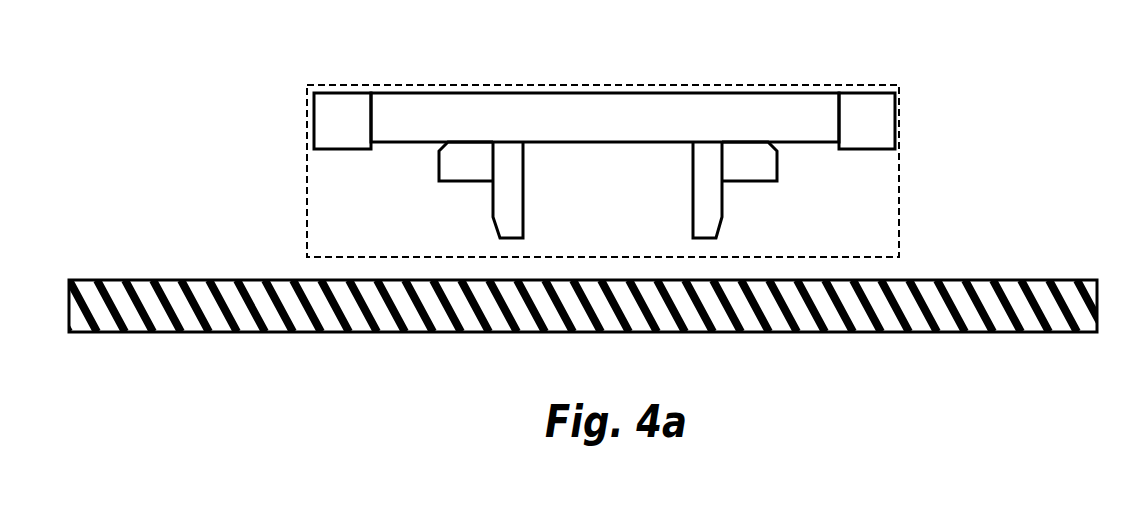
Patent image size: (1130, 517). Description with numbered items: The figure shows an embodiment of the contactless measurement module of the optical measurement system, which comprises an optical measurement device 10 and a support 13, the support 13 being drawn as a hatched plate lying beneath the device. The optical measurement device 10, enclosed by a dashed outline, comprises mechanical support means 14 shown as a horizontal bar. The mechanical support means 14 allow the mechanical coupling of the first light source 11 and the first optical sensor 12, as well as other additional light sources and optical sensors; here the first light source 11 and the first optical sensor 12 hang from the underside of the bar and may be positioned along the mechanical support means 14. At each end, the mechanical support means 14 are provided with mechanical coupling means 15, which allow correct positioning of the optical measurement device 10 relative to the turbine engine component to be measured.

The optical measurement device 10 is at (472, 85).
The first light source 11 is at (608, 161).
The first optical sensor 12 is at (508, 198).
The support 13 is at (190, 280).
The mechanical support means 14 is at (605, 117).
The mechanical coupling means 15 is at (604, 121).